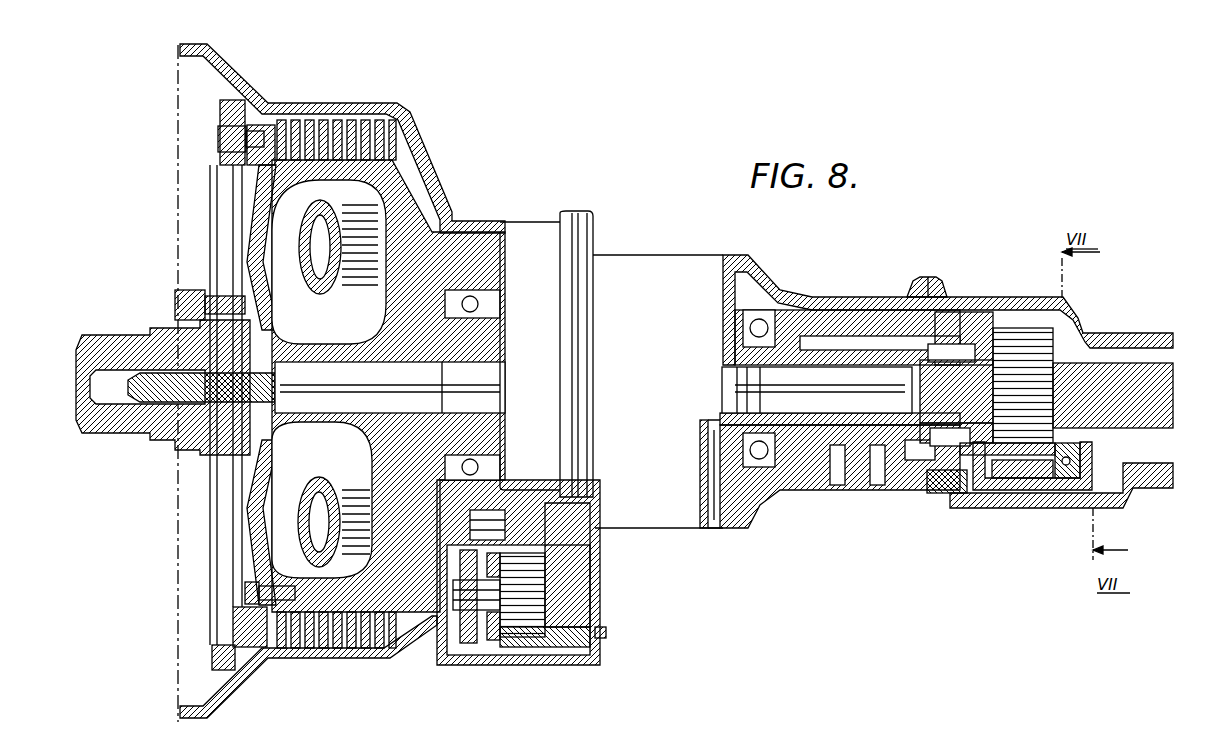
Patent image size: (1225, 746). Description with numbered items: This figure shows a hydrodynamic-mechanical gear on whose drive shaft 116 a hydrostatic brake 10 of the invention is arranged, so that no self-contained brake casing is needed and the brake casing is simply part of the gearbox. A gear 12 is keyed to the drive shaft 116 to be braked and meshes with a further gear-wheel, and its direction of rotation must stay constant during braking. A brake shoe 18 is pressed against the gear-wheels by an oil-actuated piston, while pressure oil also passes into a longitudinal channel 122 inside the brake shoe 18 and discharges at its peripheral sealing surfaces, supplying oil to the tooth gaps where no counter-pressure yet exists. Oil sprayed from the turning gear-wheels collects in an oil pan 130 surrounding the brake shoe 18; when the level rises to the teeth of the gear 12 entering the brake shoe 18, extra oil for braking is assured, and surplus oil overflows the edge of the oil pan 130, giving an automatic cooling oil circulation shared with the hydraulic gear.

The brake 10 is at (1133, 490).
The gear 12 is at (1020, 345).
The drive shaft 116 is at (1122, 390).
The oil pan 130 is at (975, 503).
The brake shoe 18 is at (1020, 480).
The longitudinal channel 122 is at (1060, 472).